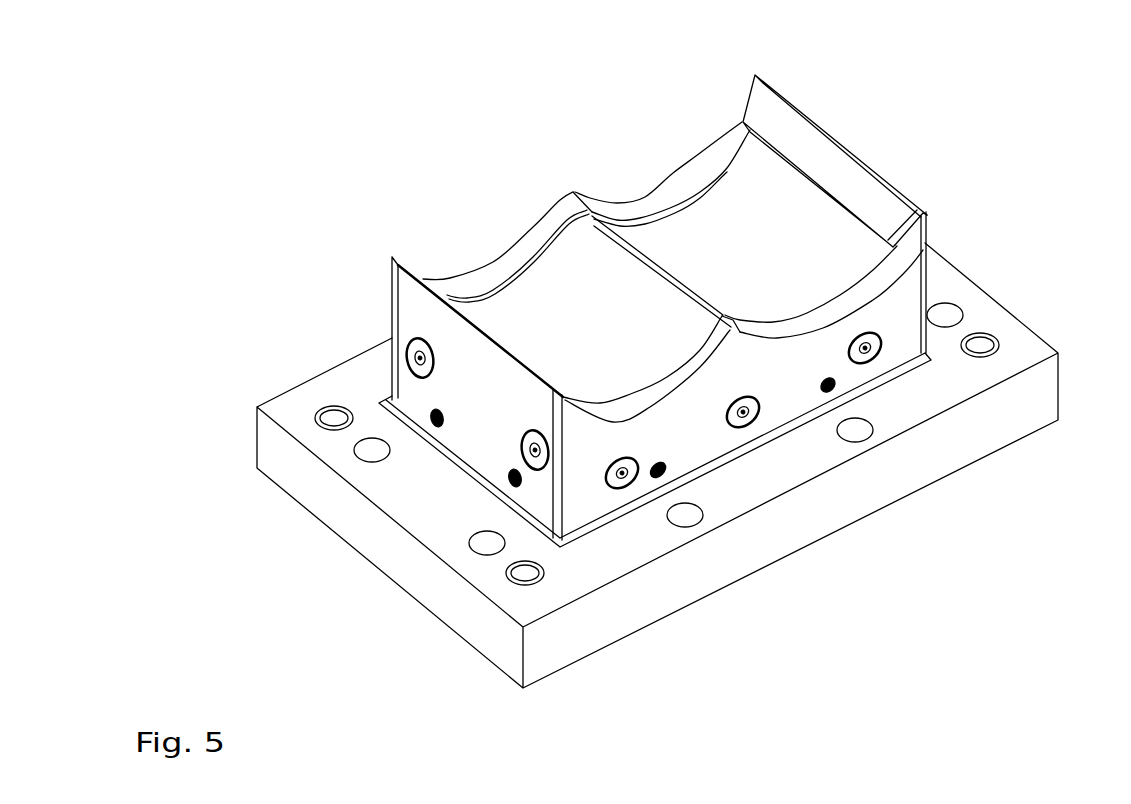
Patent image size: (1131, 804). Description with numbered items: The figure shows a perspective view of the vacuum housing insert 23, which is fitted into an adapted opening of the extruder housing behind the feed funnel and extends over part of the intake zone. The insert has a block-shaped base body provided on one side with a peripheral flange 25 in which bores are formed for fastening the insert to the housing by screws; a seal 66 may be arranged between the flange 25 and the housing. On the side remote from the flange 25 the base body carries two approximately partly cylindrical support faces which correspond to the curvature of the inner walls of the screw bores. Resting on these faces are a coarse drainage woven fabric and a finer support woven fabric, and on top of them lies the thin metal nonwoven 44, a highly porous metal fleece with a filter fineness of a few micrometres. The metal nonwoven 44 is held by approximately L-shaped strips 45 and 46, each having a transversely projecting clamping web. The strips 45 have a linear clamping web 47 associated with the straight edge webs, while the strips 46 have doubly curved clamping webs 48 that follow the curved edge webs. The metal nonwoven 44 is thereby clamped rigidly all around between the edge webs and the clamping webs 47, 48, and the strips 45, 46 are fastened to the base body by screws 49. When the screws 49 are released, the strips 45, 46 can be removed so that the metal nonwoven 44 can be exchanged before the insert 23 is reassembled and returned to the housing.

The vacuum housing insert 23 is at (265, 268).
The peripheral flange 25 is at (270, 445).
The metal nonwoven 44 is at (663, 228).
The strip 45 is at (425, 387).
The strip 46 is at (795, 412).
The linear clamping web 47 is at (835, 172).
The doubly curved clamping web 48 is at (495, 277).
The screw 49 is at (863, 360).
The seal 66 is at (350, 398).